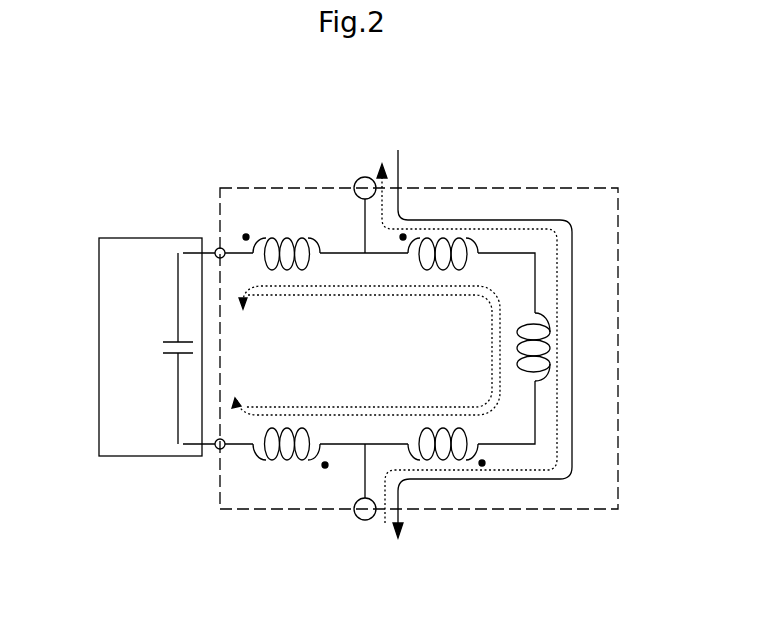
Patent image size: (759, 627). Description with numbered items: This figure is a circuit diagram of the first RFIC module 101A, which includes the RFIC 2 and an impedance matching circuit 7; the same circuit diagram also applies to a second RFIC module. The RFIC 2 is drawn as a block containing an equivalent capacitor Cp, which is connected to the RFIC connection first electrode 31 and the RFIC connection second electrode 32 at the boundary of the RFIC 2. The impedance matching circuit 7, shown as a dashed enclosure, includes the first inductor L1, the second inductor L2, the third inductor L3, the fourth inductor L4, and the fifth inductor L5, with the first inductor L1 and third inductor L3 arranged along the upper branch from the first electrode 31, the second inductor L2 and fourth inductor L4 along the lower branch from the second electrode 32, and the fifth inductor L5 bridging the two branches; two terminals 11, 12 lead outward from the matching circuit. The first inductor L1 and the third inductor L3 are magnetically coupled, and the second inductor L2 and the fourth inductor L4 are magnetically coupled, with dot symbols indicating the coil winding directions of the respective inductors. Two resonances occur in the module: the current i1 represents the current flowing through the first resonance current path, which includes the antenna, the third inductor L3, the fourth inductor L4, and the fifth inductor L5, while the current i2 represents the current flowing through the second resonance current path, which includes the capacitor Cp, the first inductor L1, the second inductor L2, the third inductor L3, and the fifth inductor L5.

The first RFIC module 101A is at (205, 104).
The RFIC 2 is at (98, 348).
The equivalent capacitor Cp is at (159, 348).
The RFIC connection first electrode 31 is at (215, 248).
The RFIC connection second electrode 32 is at (215, 449).
The first terminal 11 is at (365, 177).
The second terminal 12 is at (365, 520).
The first inductor L1 is at (281, 237).
The second inductor L2 is at (290, 463).
The third inductor L3 is at (439, 230).
The fourth inductor L4 is at (446, 468).
The fifth inductor L5 is at (562, 347).
The impedance matching circuit 7 is at (619, 302).
The current i1 is at (474, 358).
The current i2 is at (366, 350).